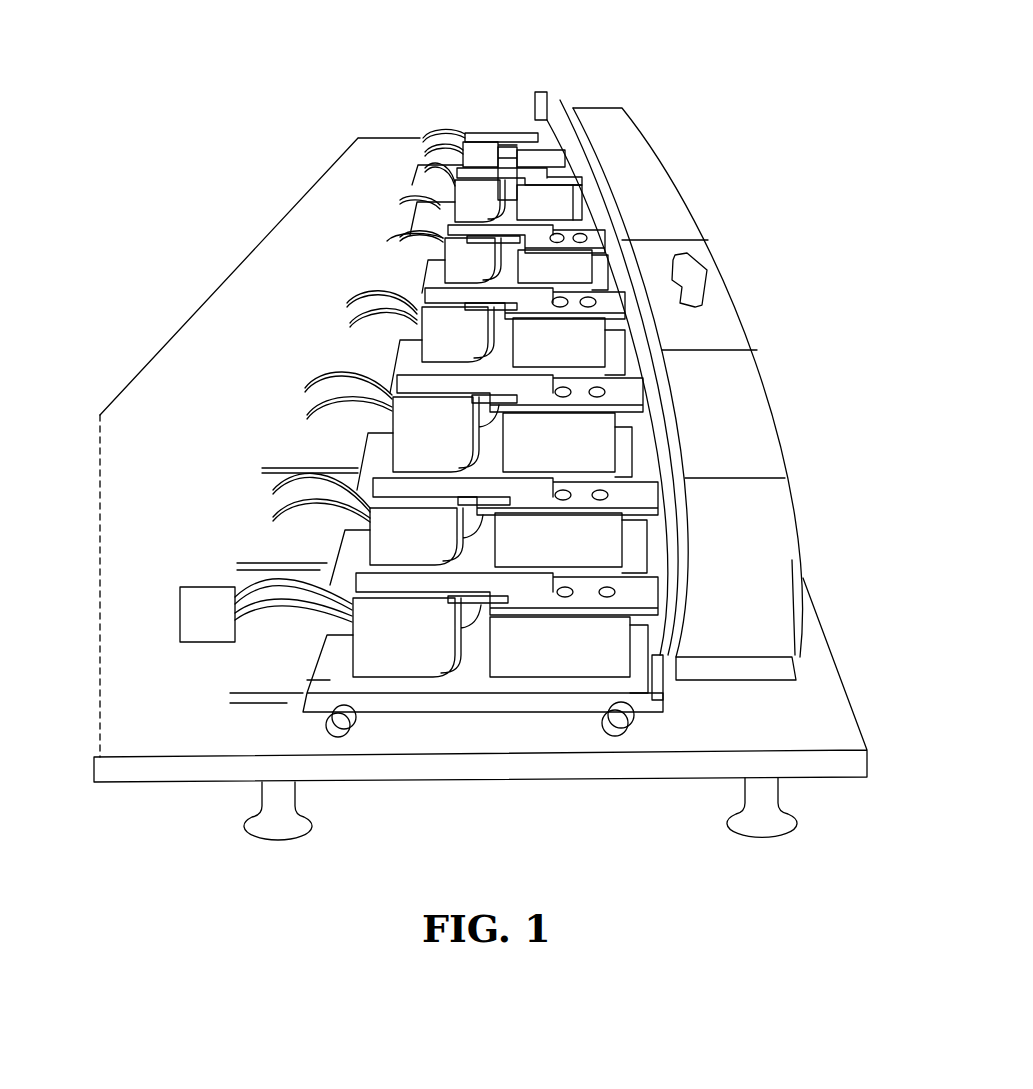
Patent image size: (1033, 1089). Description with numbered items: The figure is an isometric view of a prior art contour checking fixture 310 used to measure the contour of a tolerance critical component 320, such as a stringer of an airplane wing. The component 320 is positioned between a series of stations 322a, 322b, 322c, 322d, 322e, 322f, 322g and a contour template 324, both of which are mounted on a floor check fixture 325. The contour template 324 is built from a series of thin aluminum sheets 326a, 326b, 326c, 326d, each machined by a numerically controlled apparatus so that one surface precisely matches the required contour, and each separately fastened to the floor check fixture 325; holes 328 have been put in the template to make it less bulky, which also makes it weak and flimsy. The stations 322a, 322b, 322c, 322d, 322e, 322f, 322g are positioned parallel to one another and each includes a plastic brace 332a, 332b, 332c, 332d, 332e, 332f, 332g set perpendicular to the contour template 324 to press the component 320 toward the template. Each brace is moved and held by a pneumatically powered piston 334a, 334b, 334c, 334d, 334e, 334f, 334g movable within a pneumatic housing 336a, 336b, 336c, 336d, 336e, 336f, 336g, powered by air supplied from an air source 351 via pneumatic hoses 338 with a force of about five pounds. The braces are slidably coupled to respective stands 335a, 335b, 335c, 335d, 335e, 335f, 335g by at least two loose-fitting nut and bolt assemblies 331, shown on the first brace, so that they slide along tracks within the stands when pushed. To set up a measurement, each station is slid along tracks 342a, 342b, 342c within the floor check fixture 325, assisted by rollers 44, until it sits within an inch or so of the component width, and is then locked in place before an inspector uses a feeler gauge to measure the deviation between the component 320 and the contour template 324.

The contour checking fixture 310 is at (232, 263).
The component 320 is at (528, 82).
The station 322a is at (272, 666).
The station 322b is at (314, 549).
The station 322c is at (338, 439).
The station 322d is at (388, 344).
The station 322e is at (406, 268).
The station 322f is at (408, 206).
The station 322g is at (416, 151).
The contour template 324 is at (773, 358).
The floor check fixture 325 is at (508, 770).
The aluminum sheet 326a is at (775, 505).
The aluminum sheet 326b is at (745, 415).
The aluminum sheet 326c is at (718, 302).
The aluminum sheet 326d is at (593, 122).
The holes 328 is at (687, 273).
The nut and bolt assemblies 331 is at (608, 585).
The plastic brace 332a is at (630, 592).
The plastic brace 332b is at (640, 497).
The plastic brace 332c is at (635, 400).
The plastic brace 332d is at (613, 293).
The plastic brace 332e is at (613, 245).
The plastic brace 332f is at (560, 178).
The plastic brace 332g is at (547, 142).
The pneumatically powered piston 334a is at (477, 603).
The pneumatically powered piston 334b is at (503, 500).
The pneumatically powered piston 334c is at (503, 400).
The pneumatically powered piston 334d is at (504, 326).
The pneumatically powered piston 334e is at (512, 259).
The pneumatically powered piston 334f is at (472, 208).
The pneumatically powered piston 334g is at (478, 157).
The stand 335a is at (592, 654).
The stand 335b is at (597, 541).
The stand 335c is at (582, 454).
The stand 335d is at (582, 359).
The stand 335e is at (587, 282).
The stand 335f is at (560, 205).
The stand 335g is at (550, 160).
The pneumatic housing 336a is at (387, 663).
The pneumatic housing 336b is at (393, 548).
The pneumatic housing 336c is at (402, 452).
The pneumatic housing 336d is at (422, 348).
The pneumatic housing 336e is at (447, 272).
The pneumatic housing 336f is at (443, 197).
The pneumatic housing 336g is at (465, 145).
The pneumatic hoses 338 is at (315, 624).
The track 342a is at (262, 702).
The track 342b is at (233, 570).
The track 342c is at (257, 478).
The air source 351 is at (197, 622).
The rollers 44 is at (340, 727).